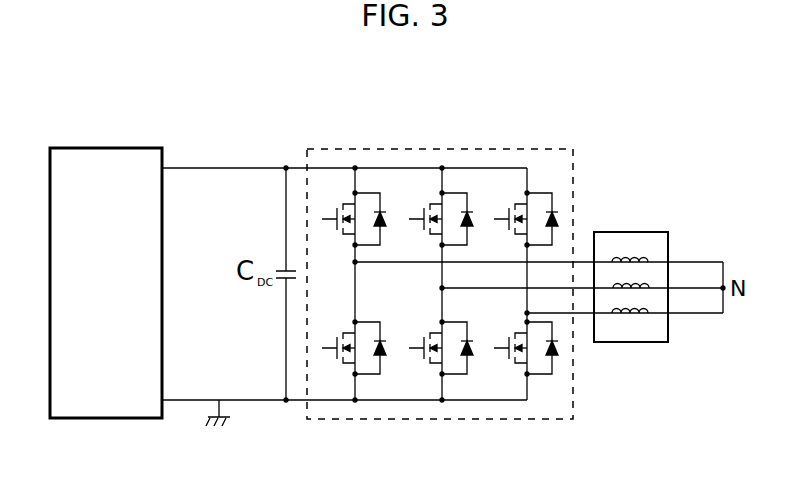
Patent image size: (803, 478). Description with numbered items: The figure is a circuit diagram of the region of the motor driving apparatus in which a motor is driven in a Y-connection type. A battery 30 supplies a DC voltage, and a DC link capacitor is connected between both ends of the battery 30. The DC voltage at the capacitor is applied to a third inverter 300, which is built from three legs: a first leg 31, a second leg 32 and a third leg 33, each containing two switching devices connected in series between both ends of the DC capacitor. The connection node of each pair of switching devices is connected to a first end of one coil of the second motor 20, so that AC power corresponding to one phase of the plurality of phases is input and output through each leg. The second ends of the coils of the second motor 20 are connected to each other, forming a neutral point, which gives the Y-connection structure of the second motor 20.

The battery 30 is at (100, 148).
The third inverter 300 is at (573, 419).
The first leg 31 is at (362, 160).
The second leg 32 is at (451, 160).
The third leg 33 is at (531, 160).
The second motor 20 is at (630, 232).